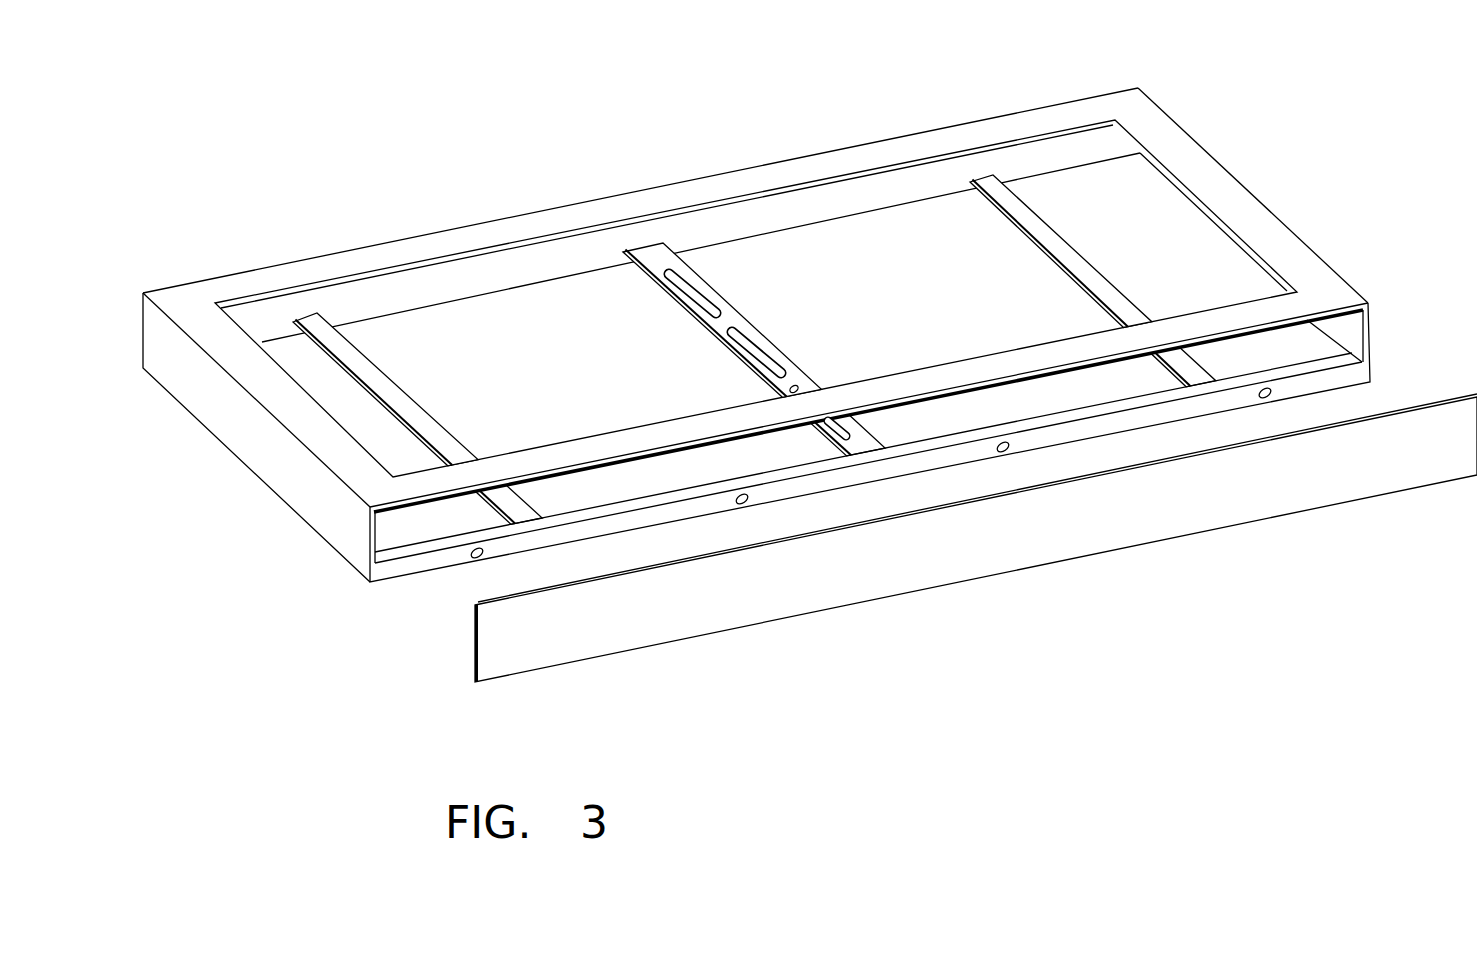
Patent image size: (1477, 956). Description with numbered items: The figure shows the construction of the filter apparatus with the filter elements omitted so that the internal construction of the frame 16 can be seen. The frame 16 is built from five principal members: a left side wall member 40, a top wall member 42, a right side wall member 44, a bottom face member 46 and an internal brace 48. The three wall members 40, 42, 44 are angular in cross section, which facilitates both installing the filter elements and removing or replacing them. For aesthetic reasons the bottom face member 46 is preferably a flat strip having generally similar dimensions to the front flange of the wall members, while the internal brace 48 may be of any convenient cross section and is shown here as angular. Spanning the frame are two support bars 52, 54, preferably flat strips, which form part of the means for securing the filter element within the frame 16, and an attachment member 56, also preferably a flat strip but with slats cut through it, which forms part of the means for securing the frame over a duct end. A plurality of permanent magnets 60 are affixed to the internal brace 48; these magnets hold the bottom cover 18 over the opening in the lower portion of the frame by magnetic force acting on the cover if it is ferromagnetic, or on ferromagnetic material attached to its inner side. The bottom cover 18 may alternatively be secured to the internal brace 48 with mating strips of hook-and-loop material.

The frame 16 is at (1208, 145).
The bottom cover 18 is at (1195, 542).
The left side wall member 40 is at (258, 484).
The top wall member 42 is at (538, 208).
The right side wall member 44 is at (1282, 213).
The bottom face member 46 is at (1005, 345).
The internal brace 48 is at (1050, 409).
The support bar 52 is at (397, 378).
The support bar 54 is at (1073, 237).
The attachment member 56 is at (750, 316).
The permanent magnets 60 is at (490, 558).